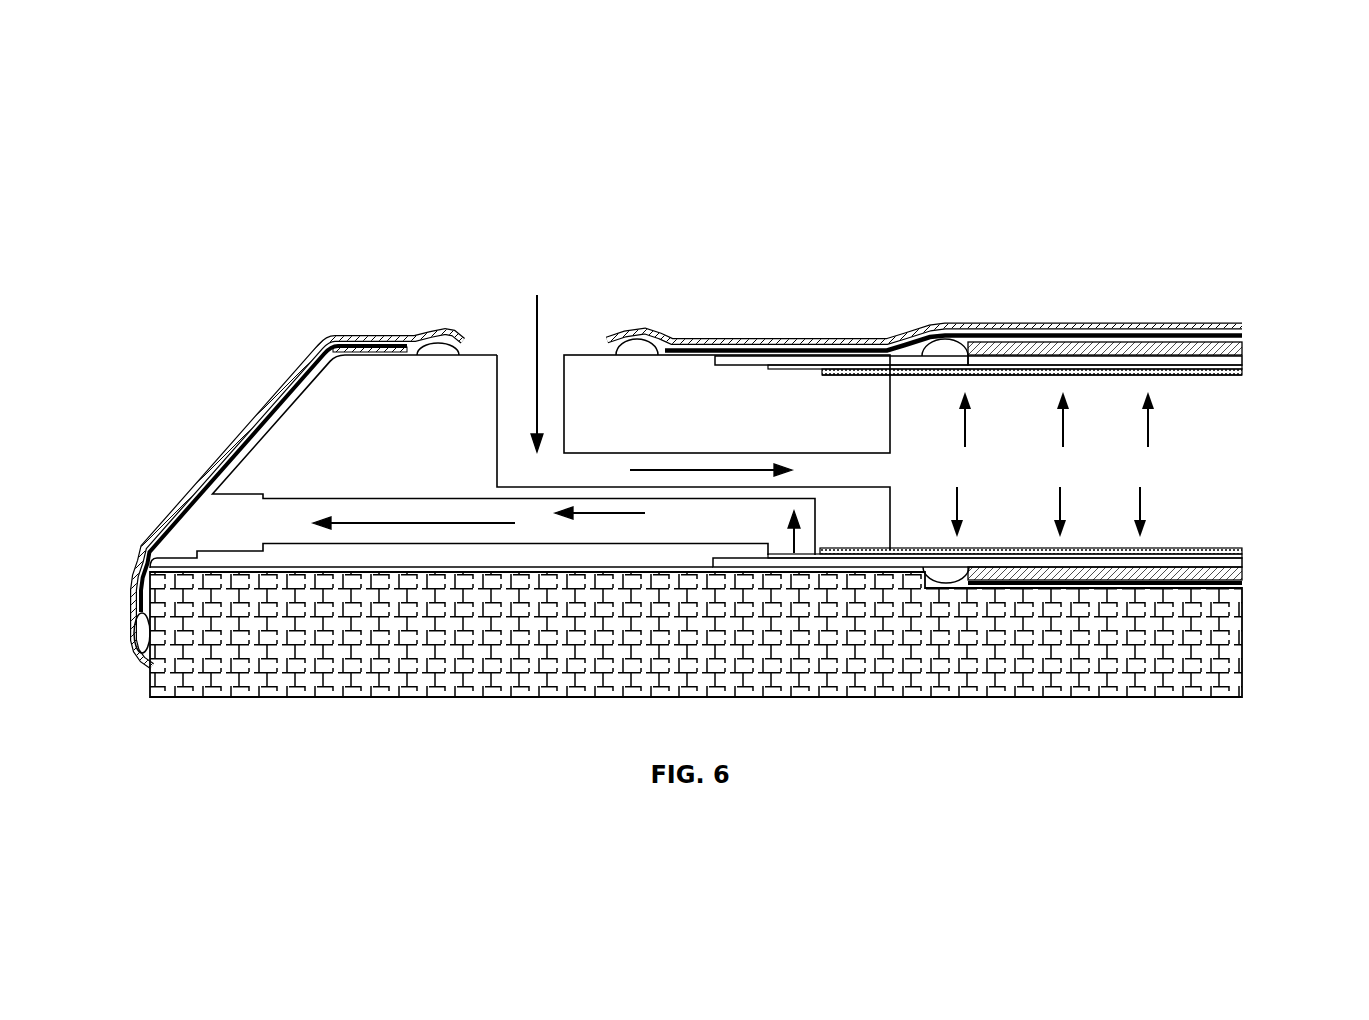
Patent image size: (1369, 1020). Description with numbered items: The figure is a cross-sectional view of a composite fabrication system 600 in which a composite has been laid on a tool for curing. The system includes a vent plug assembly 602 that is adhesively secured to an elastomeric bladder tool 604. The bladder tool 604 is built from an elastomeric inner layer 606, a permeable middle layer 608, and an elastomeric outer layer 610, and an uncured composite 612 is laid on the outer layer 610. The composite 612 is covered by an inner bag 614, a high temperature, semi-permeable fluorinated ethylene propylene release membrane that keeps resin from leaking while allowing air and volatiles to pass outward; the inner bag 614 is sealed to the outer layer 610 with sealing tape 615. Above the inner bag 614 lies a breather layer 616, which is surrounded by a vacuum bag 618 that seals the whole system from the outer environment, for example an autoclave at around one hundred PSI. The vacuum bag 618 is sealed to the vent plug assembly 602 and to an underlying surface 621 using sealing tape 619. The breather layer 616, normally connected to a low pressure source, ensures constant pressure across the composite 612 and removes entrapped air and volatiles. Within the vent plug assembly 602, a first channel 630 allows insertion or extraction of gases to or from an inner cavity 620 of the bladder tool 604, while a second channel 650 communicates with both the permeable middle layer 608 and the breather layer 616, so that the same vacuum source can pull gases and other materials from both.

The composite fabrication system 600 is at (203, 124).
The vent plug assembly 602 is at (365, 433).
The elastomeric bladder tool 604 is at (1246, 373).
The elastomeric inner layer 606 is at (876, 377).
The permeable middle layer 608 is at (803, 372).
The elastomeric outer layer 610 is at (735, 364).
The composite 612 is at (1262, 361).
The inner bag 614 is at (1246, 348).
The sealing tape 615 is at (940, 345).
The breather layer 616 is at (186, 508).
The vacuum bag 618 is at (266, 407).
The sealing tape 619 is at (445, 336).
The inner cavity 620 is at (1060, 473).
The underlying surface 621 is at (405, 692).
The first channel 630 is at (536, 330).
The second channel 650 is at (260, 533).